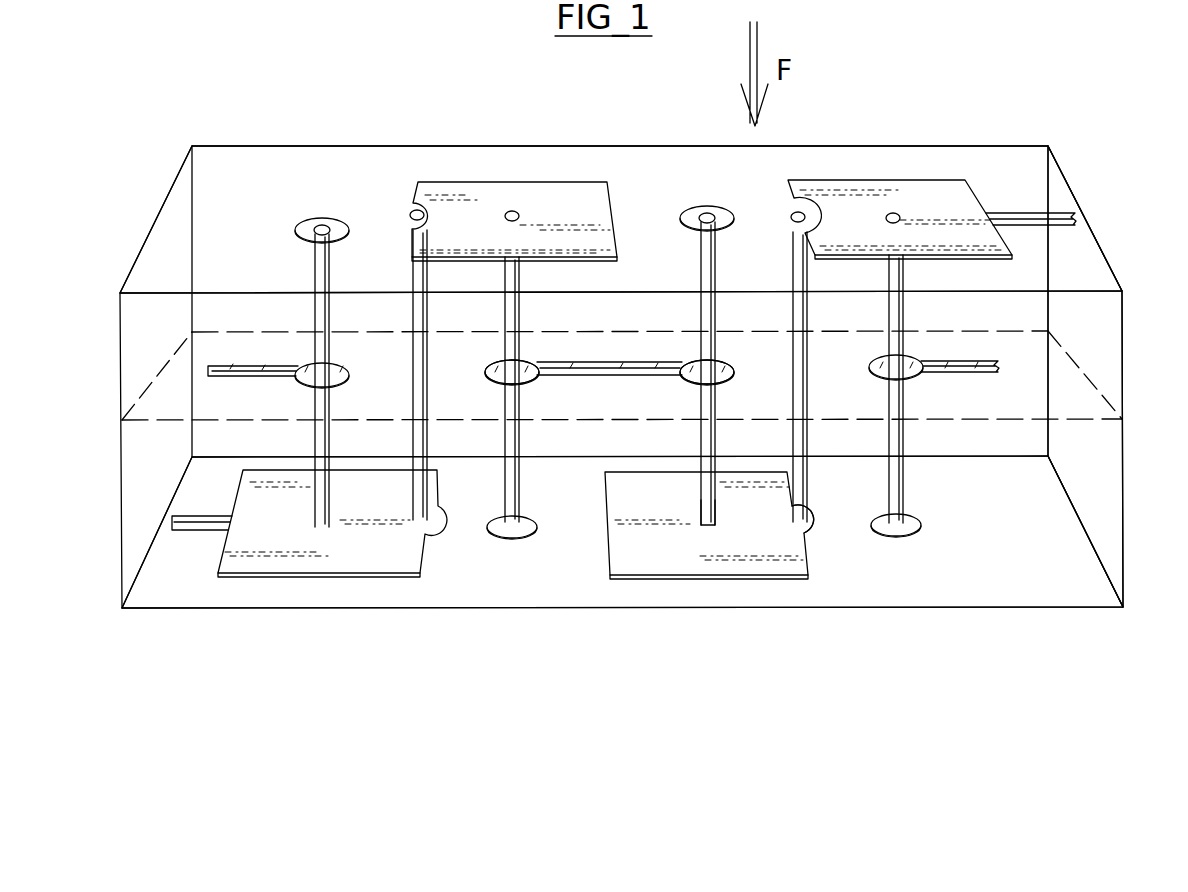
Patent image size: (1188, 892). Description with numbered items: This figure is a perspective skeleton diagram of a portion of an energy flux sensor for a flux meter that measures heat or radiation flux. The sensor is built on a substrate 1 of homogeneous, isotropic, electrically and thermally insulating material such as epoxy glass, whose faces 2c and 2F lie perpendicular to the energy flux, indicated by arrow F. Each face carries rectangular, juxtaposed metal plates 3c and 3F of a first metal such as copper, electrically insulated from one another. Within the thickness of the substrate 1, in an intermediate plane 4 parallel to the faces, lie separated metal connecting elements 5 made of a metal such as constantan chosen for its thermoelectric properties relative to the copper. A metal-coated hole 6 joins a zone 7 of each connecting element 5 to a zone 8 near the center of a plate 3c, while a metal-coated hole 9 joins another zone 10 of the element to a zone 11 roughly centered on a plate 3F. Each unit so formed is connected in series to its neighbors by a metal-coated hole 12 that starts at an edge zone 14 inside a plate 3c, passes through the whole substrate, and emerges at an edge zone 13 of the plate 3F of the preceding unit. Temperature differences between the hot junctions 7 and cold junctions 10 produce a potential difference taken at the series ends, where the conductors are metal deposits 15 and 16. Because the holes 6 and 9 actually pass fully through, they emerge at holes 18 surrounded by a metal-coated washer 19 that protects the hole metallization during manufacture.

The substrate 1 is at (244, 263).
The face of substrate 2c is at (1025, 163).
The face of substrate 2F is at (1083, 568).
The metal plate 3c is at (597, 202).
The metal plate 3F is at (402, 552).
The intermediate plane 4 is at (1092, 405).
The metal connecting element 5 is at (610, 362).
The hole 6 is at (516, 272).
The point or zone 7 is at (500, 382).
The point or zone 8 is at (513, 210).
The hole 9 is at (708, 433).
The point or zone 10 is at (709, 364).
The point or zone 11 is at (701, 527).
The metal-coated hole 12 is at (427, 375).
The point or zone 13 is at (813, 528).
The point or zone 14 is at (794, 214).
The metal deposit 15 is at (197, 521).
The metal deposit 16 is at (1058, 213).
The hole 18 is at (318, 226).
The washer 19 is at (331, 224).